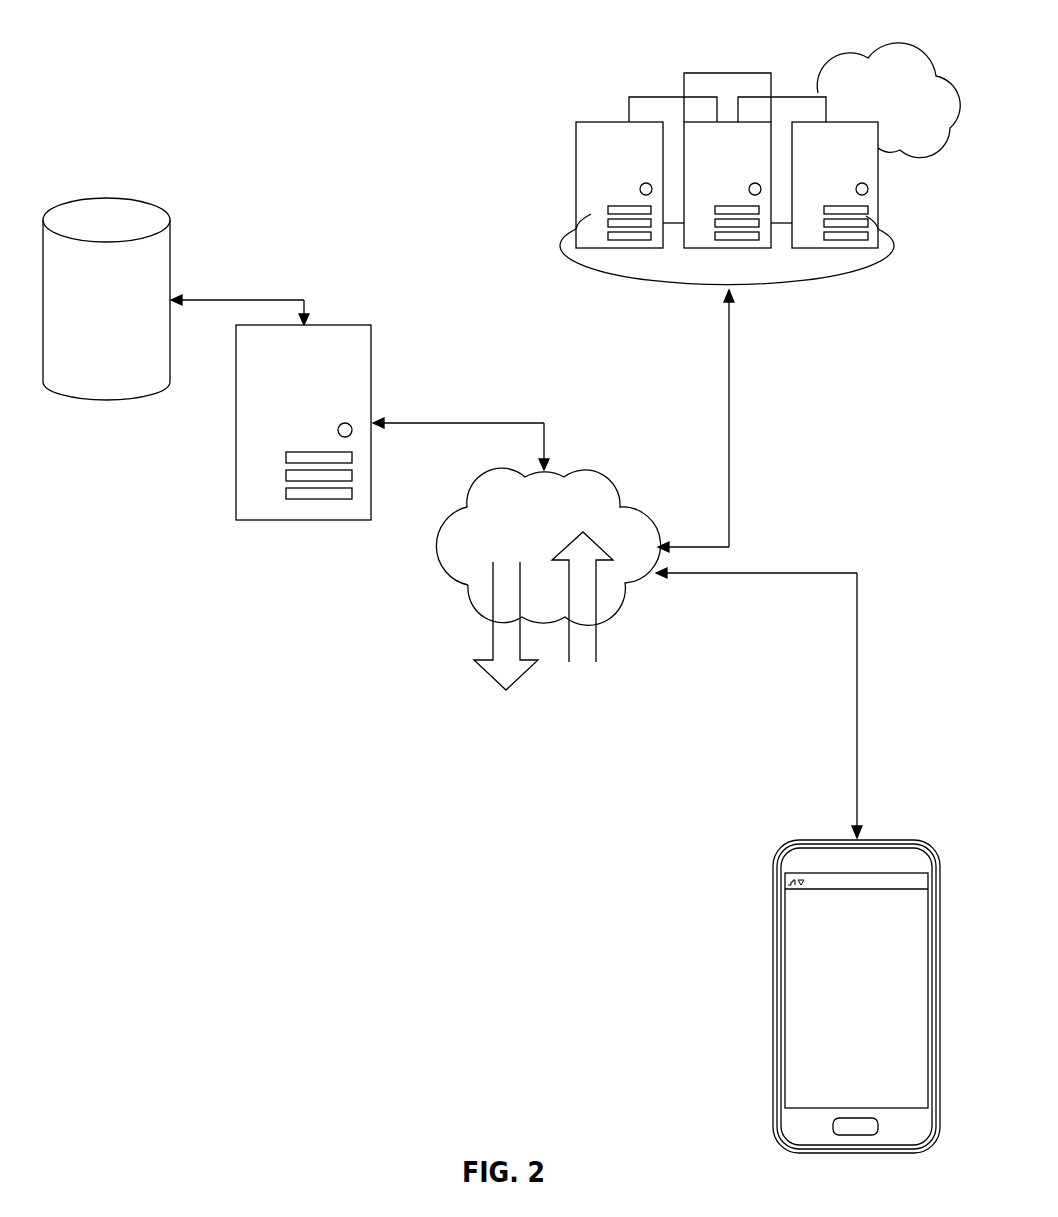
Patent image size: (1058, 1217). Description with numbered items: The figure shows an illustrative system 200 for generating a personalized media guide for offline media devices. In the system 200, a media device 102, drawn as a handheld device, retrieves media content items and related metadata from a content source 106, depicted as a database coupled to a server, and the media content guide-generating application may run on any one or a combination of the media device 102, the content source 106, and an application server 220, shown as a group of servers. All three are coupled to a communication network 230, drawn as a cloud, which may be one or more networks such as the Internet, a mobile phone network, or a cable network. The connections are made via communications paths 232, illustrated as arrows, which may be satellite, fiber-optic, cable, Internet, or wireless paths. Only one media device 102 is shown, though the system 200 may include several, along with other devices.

The system 200 is at (476, 36).
The content source 106 is at (102, 402).
The application server 220 is at (803, 286).
The communication network 230 is at (583, 473).
The communications path 232 is at (458, 422).
The media device 102 is at (828, 838).